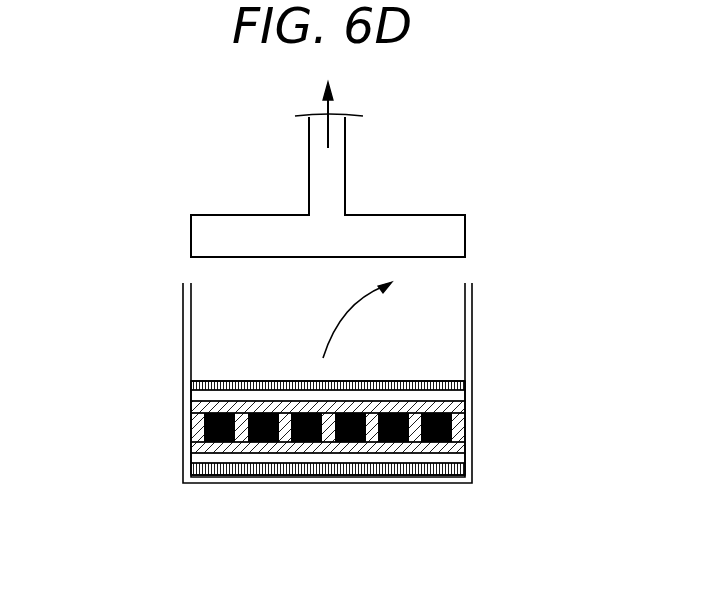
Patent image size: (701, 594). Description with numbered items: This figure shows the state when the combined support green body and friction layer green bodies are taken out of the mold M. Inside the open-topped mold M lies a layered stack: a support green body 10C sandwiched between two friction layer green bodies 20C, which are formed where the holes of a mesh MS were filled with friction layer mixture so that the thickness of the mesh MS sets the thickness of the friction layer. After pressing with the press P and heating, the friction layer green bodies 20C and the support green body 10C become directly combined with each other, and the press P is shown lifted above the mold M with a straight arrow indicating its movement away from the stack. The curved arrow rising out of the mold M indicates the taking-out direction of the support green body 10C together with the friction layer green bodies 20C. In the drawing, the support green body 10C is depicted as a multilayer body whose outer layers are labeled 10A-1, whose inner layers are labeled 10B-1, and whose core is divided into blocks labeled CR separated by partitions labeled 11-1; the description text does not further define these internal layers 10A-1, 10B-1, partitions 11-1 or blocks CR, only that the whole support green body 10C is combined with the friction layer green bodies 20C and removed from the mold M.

The press P is at (235, 228).
The mold M is at (183, 297).
The mesh MS is at (288, 387).
The friction layer green body 20C is at (250, 384).
The first protective layer 10A-1 is at (193, 395).
The second protective layer 10B-1 is at (193, 408).
The support green body 10C is at (245, 432).
The spacer 11-1 is at (373, 432).
The cell CR is at (440, 442).